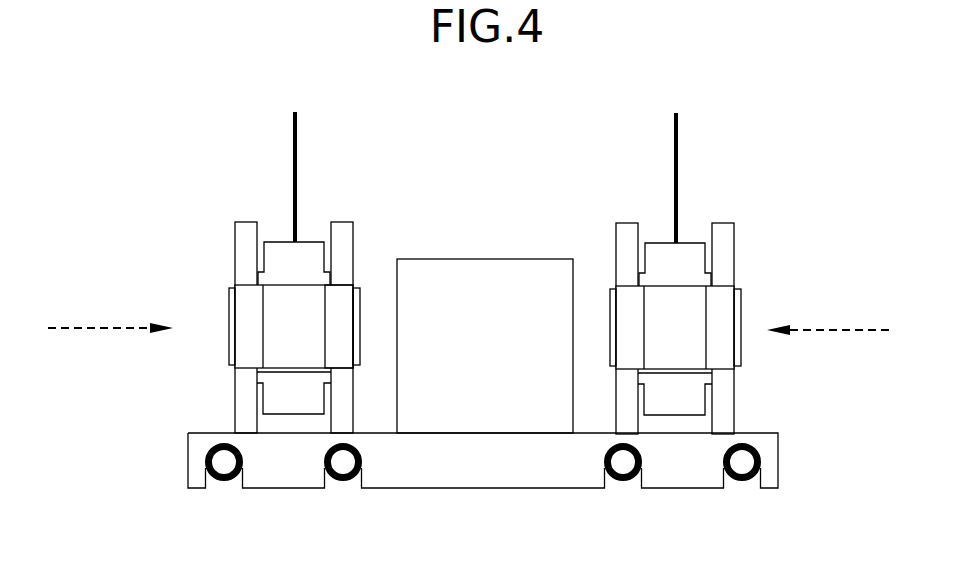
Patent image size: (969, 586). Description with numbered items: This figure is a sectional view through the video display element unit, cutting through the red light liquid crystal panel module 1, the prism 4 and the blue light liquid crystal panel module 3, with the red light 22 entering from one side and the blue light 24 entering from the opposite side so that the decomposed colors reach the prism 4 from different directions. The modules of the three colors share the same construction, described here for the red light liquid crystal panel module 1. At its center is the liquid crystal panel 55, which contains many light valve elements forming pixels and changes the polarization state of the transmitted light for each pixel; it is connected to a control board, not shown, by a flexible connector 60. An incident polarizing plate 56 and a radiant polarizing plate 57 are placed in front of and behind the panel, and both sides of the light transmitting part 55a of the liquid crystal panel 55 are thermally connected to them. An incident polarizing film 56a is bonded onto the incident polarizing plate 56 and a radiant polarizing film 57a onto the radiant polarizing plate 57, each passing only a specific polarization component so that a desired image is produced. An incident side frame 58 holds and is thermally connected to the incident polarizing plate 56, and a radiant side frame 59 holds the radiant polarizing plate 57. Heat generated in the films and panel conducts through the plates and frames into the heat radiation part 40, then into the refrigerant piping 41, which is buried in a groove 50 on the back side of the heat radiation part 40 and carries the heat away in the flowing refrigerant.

The red light liquid crystal panel module 1 is at (272, 337).
The blue light liquid crystal panel module 3 is at (698, 204).
The prism 4 is at (485, 258).
The red light 22 is at (92, 327).
The blue light 24 is at (827, 329).
The heat radiation part 40 is at (481, 489).
The refrigerant piping 41 is at (222, 488).
The groove 50 is at (323, 488).
The liquid crystal panel 55 is at (283, 240).
The light transmitting part 55a is at (273, 360).
The incident polarizing plate 56 is at (235, 353).
The incident polarizing film 56a is at (230, 301).
The radiant polarizing plate 57 is at (347, 310).
The radiant polarizing film 57a is at (357, 330).
The incident side frame 58 is at (235, 253).
The radiant side frame 59 is at (343, 222).
The flexible connector 60 is at (298, 125).